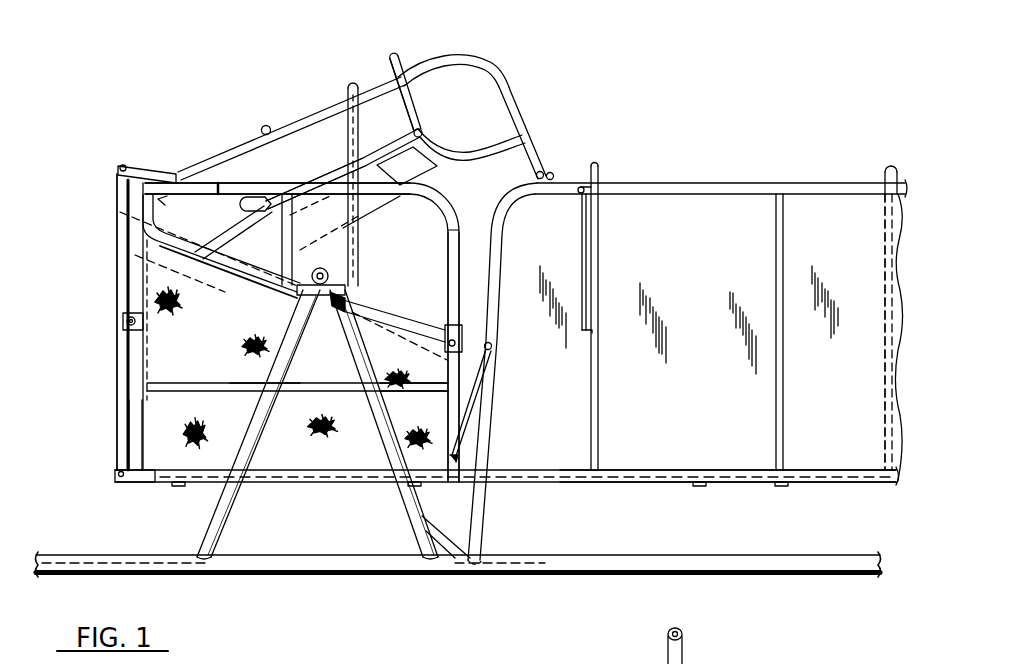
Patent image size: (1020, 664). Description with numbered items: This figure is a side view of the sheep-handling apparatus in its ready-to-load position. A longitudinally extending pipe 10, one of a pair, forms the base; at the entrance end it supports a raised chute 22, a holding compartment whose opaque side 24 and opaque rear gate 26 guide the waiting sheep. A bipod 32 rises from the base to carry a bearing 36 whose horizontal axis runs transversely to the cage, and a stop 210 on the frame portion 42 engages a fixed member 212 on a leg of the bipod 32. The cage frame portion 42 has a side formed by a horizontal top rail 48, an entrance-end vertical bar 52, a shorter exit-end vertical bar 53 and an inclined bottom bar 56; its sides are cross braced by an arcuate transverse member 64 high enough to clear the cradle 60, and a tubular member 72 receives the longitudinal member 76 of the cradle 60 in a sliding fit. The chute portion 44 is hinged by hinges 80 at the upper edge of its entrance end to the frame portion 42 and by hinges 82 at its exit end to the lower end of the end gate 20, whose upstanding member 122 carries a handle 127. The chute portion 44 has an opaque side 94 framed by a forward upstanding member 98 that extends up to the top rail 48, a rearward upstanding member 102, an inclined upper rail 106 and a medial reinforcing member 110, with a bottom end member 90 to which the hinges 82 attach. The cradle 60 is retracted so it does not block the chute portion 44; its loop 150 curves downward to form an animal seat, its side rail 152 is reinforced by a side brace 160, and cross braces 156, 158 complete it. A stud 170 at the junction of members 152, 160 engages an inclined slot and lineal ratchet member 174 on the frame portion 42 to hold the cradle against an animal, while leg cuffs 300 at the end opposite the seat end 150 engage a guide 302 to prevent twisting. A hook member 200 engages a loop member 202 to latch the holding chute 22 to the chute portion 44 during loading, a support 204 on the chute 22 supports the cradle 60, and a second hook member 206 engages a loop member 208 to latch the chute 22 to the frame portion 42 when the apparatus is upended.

The longitudinally extending pipe 10 is at (636, 555).
The end gate 20 is at (112, 365).
The raised chute 22 is at (692, 486).
The side of the chute 24 is at (705, 208).
The rear gate 26 is at (882, 266).
The bipod member 32 is at (262, 462).
The bearing 36 is at (330, 278).
The frame portion 42 is at (452, 196).
The chute portion 44 is at (200, 486).
The longitudinal bar 48 is at (248, 186).
The vertical bar 52 is at (455, 297).
The vertical bar 53 is at (158, 212).
The inclined bar 56 is at (406, 318).
The animal cradle 60 is at (507, 70).
The transverse member 64 is at (352, 86).
The tubular member 72 is at (163, 203).
The longitudinal member 76 is at (302, 118).
The hinge 80 is at (455, 340).
The hinge 82 is at (118, 478).
The end member 90 is at (340, 470).
The side of the chute portion 94 is at (293, 368).
The forward upstanding member 98 is at (137, 437).
The rearward upstanding member 102 is at (446, 408).
The inclined longitudinal upper rail 106 is at (228, 282).
The longitudinal medial reinforcing member 110 is at (207, 384).
The upstanding member 122 is at (121, 247).
The handle 127 is at (125, 318).
The loop 150 is at (546, 172).
The side of the cradle 152 is at (442, 143).
The cross brace 156 is at (265, 126).
The cross brace 158 is at (395, 58).
The side brace 160 is at (410, 110).
The stud 170 is at (414, 133).
The slot and lineal ratchet member 174 is at (380, 200).
The hook member 200 is at (486, 425).
The loop member 202 is at (458, 452).
The support 204 is at (547, 190).
The second hook member 206 is at (584, 276).
The loop member 208 is at (217, 183).
The stop 210 is at (455, 248).
The fixed member 212 is at (263, 386).
The leg cuffs 300 is at (265, 202).
The guide 302 is at (243, 242).